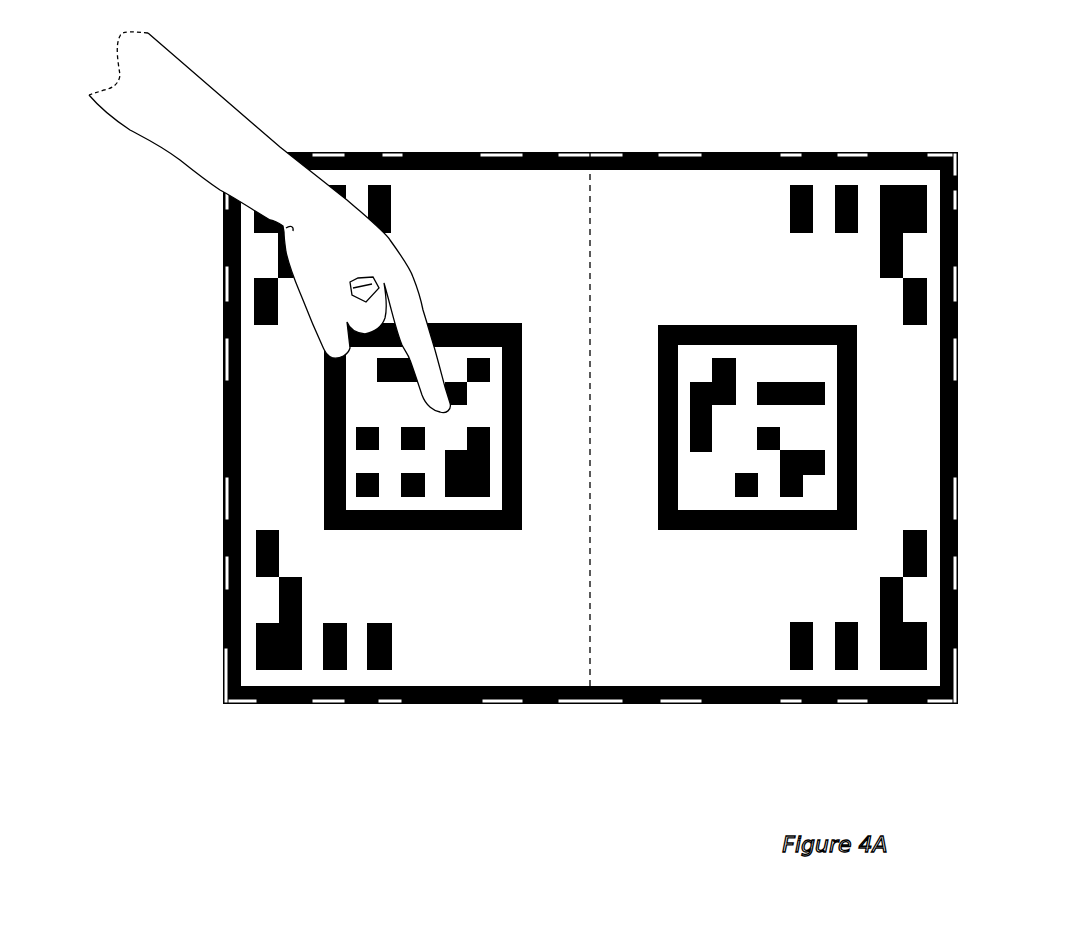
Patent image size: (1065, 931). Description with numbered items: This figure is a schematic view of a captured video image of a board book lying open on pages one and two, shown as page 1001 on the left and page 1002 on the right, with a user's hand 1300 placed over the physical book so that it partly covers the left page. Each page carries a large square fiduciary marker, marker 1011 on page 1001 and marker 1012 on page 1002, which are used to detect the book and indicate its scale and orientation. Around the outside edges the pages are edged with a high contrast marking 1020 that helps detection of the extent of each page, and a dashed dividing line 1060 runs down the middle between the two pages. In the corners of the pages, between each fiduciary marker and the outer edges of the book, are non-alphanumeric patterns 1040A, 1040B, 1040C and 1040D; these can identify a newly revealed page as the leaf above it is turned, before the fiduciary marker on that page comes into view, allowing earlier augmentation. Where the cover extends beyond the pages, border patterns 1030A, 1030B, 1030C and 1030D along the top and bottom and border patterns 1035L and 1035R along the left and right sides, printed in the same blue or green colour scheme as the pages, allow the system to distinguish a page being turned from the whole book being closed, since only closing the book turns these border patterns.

The page 1 1001 is at (330, 396).
The page 2 1002 is at (850, 396).
The fiduciary marker 1011 is at (322, 394).
The fiduciary marker 1012 is at (860, 392).
The high contrast marking 1020 is at (681, 706).
The border pattern 1030A is at (364, 149).
The border pattern 1030B is at (881, 149).
The border pattern 1030C is at (418, 706).
The border pattern 1030D is at (813, 706).
The border pattern 1035L is at (222, 533).
The border pattern 1035R is at (958, 533).
The non-alphanumeric pattern 1040A is at (929, 197).
The non-alphanumeric pattern 1040B is at (250, 288).
The non-alphanumeric pattern 1040C is at (255, 647).
The non-alphanumeric pattern 1040D is at (929, 658).
The center dividing line 1060 is at (590, 653).
The user's hand 1300 is at (269, 222).